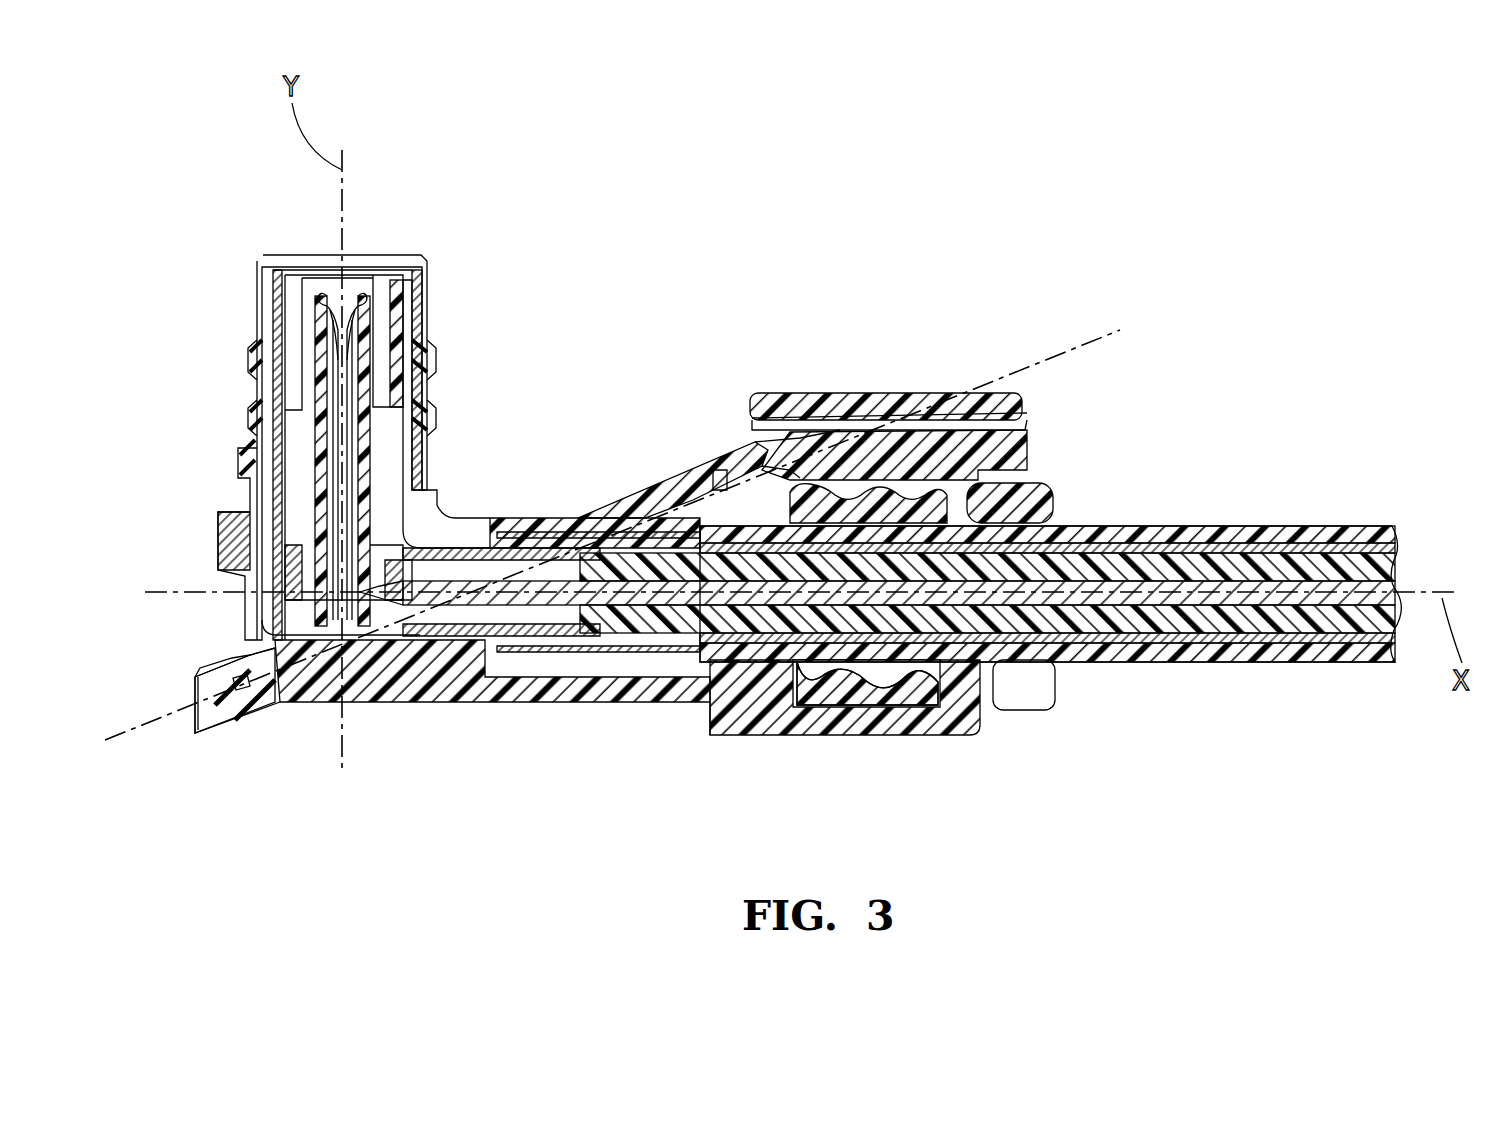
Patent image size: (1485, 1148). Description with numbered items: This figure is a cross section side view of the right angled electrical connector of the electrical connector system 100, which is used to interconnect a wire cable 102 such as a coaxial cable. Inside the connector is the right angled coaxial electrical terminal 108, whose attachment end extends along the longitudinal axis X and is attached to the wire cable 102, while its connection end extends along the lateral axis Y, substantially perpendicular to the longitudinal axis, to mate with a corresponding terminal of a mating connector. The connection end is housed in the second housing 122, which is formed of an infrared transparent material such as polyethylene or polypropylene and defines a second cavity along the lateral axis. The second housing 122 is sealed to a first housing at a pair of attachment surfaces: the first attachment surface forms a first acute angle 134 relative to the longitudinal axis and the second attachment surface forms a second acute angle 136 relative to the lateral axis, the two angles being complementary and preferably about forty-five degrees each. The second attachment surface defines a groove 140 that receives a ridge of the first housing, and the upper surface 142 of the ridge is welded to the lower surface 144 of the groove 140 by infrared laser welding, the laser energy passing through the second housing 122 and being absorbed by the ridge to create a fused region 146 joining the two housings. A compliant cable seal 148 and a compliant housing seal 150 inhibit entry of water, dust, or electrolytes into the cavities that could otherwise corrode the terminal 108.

The electrical connector system 100 is at (815, 197).
The wire cable 102 is at (1220, 658).
The terminal 108 is at (305, 332).
The second housing 122 is at (540, 515).
The first acute angle 134 is at (1180, 400).
The second acute angle 136 is at (580, 320).
The groove 140 is at (240, 690).
The upper surface 142 is at (250, 690).
The lower surface 144 is at (218, 677).
The fused region 146 is at (742, 465).
The cable seal 148 is at (860, 695).
The housing seal 150 is at (437, 330).